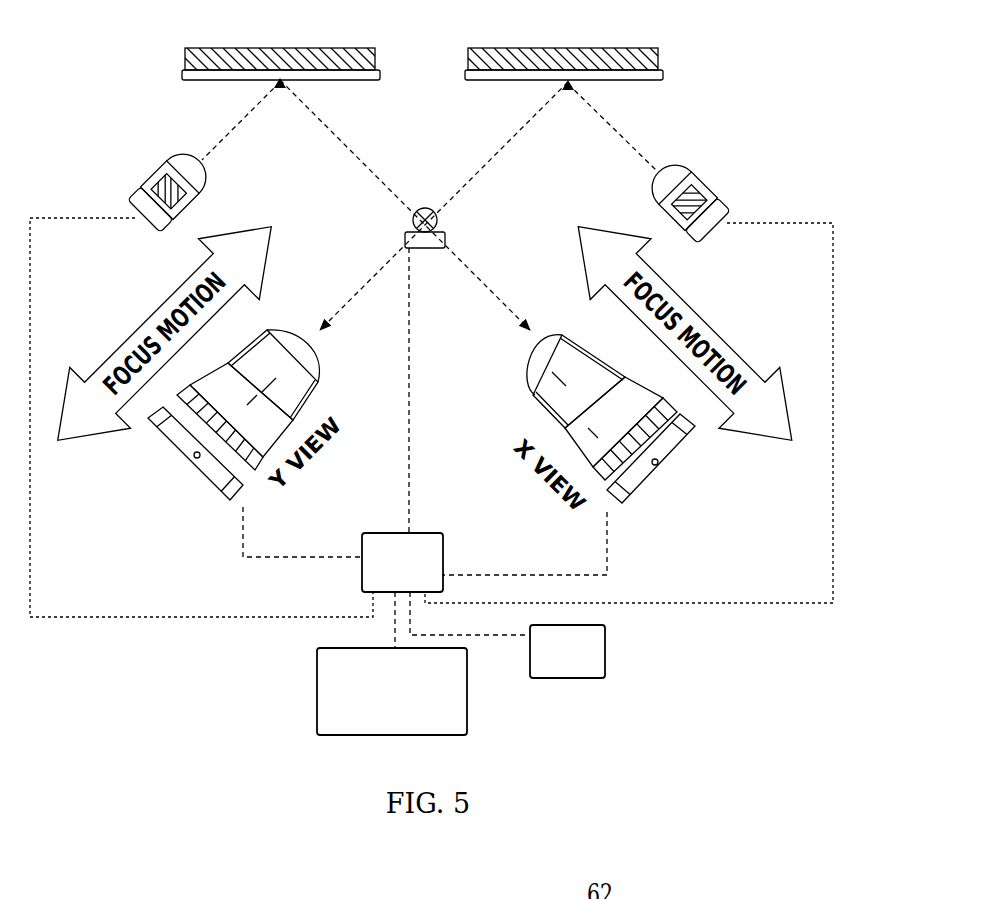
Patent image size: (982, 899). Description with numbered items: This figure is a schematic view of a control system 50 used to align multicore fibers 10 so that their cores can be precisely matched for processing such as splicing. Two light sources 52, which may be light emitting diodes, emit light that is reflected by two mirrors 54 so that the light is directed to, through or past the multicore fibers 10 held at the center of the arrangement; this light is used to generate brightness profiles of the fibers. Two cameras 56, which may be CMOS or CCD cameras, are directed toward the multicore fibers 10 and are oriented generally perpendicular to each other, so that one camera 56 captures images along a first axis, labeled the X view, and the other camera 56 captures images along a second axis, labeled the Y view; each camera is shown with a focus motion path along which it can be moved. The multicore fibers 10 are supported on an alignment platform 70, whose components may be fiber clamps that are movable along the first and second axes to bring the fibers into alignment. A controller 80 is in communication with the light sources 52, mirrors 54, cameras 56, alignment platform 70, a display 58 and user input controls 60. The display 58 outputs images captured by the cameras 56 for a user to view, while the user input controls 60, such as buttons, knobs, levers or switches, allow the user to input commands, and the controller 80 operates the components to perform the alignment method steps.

The multicore fiber 10 is at (426, 206).
The control system 50 is at (759, 122).
The light source 52 is at (112, 191).
The mirror 54 is at (180, 60).
The camera 56 is at (218, 514).
The display 58 is at (401, 706).
The user input control 60 is at (580, 668).
The alignment platform 70 is at (403, 236).
The controller 80 is at (413, 578).